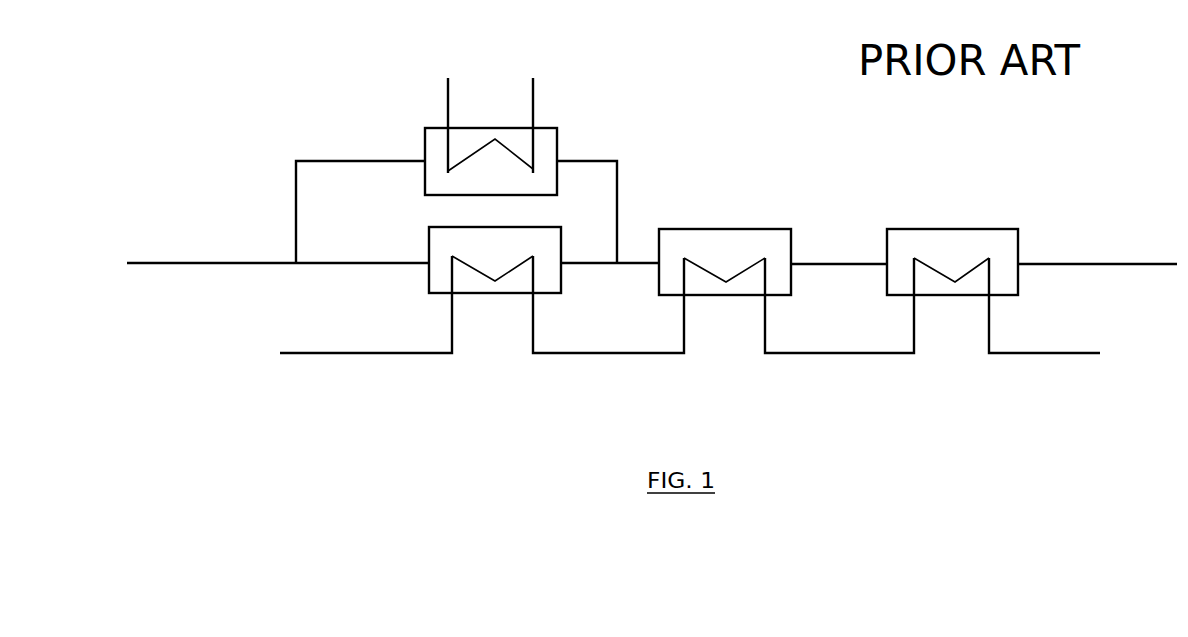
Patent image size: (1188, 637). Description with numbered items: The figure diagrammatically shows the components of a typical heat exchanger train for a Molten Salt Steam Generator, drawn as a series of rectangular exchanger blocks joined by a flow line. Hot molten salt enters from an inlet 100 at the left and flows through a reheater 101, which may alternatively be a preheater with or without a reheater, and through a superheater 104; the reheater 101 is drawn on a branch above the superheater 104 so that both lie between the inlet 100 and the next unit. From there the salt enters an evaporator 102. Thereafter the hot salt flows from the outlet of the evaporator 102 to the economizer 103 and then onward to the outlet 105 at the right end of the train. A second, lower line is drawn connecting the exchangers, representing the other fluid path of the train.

The inlet 100 is at (160, 263).
The reheater 101 is at (558, 137).
The evaporator 102 is at (710, 229).
The economizer 103 is at (913, 229).
The superheater 104 is at (429, 278).
The outlet 105 is at (1117, 263).